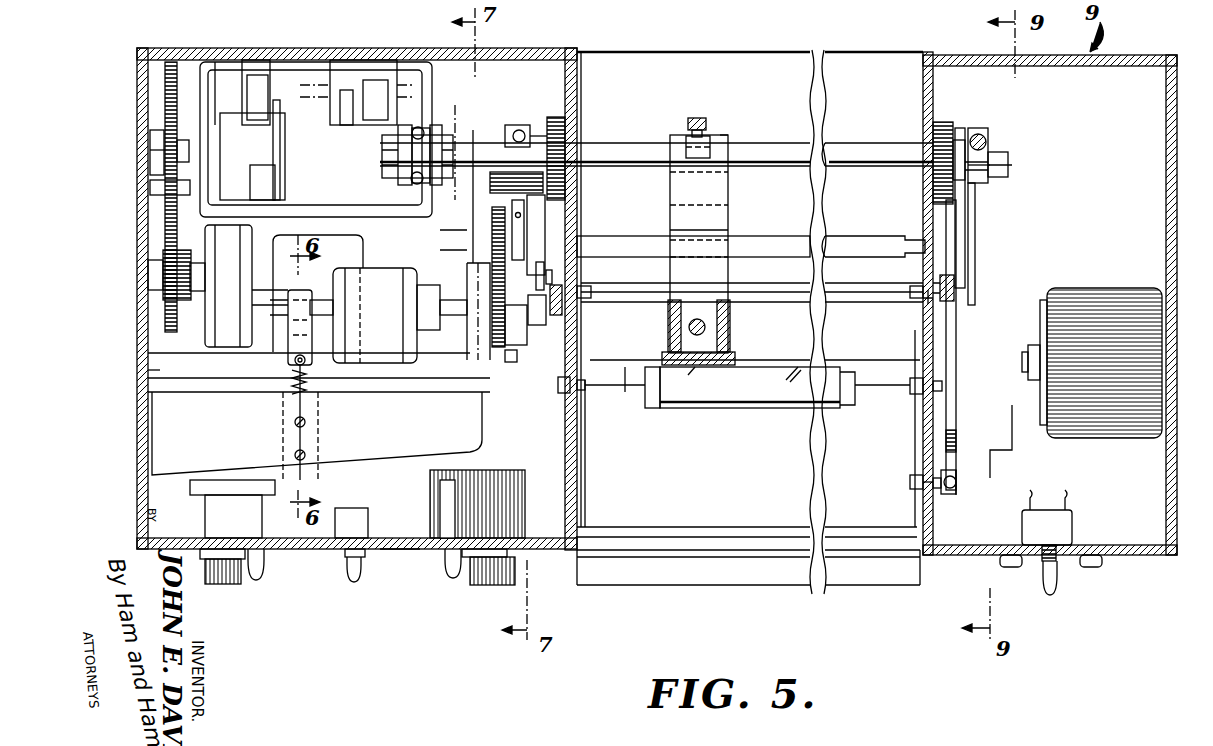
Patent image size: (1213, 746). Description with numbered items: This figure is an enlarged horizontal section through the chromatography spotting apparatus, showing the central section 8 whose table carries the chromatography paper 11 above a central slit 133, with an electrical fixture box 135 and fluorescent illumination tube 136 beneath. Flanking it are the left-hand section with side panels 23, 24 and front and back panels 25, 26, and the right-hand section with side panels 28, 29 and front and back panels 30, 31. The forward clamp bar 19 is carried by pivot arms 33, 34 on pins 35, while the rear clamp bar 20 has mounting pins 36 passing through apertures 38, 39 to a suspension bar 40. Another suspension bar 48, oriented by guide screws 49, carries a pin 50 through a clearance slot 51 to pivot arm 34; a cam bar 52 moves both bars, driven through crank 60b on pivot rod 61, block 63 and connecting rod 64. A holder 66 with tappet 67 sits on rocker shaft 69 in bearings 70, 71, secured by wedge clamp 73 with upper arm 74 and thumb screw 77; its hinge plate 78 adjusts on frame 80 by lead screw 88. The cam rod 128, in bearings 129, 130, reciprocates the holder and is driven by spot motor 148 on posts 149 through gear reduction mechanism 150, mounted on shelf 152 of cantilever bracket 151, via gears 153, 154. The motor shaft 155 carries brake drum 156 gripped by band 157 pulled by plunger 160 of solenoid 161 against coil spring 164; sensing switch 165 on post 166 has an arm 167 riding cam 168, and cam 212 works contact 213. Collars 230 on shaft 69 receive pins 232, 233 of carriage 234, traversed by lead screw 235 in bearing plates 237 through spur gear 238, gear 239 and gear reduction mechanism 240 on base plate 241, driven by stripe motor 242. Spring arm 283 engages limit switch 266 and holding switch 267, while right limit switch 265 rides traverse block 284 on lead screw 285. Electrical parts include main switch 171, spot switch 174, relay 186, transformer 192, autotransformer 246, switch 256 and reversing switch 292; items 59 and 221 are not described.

The central section 8 is at (792, 46).
The chromatography paper 11 is at (716, 60).
The forward clamp bar 19 is at (726, 527).
The rear clamp bar 20 is at (775, 302).
The side panel 23 is at (137, 92).
The side panel 24 is at (582, 62).
The front panel 25 is at (412, 549).
The back panel 26 is at (505, 58).
The side panel 28 is at (923, 80).
The side panel 29 is at (1177, 192).
The front panel 30 is at (1128, 555).
The back panel 31 is at (1125, 55).
The pivot arm 33 is at (585, 452).
The pivot arm 34 is at (915, 447).
The pins or screws 35 is at (587, 384).
The mounting pin 36 is at (591, 292).
The clearance aperture 38 is at (575, 206).
The clearance aperture 39 is at (925, 300).
The suspension bar 40 is at (954, 300).
The suspension bar 48 is at (952, 478).
The guide screws 49 is at (952, 495).
The pin 50 is at (910, 482).
The clearance slot 51 is at (925, 490).
The cam bar 52 is at (956, 356).
The pivot bracket 59 is at (984, 134).
The operating crank 60b is at (505, 128).
The pivot rod 61 is at (1008, 165).
The block 63 is at (995, 146).
The connecting rod 64 is at (975, 213).
The holder 66 is at (735, 188).
The mounting tappet 67 is at (728, 222).
The rocker shaft 69 is at (860, 143).
The bearing 70 is at (556, 117).
The bearing 71 is at (945, 125).
The wedge clamp element 73 is at (732, 133).
The upper arm 74 is at (686, 140).
The knurled thumb screw 77 is at (697, 118).
The inner hinge plate 78 is at (708, 365).
The frame 80 is at (661, 334).
The lead screw 88 is at (705, 330).
The cam rod 128 is at (636, 236).
The bearing 129 is at (560, 226).
The bearing 130 is at (965, 232).
The central slit 133 is at (778, 360).
The electrical fixture box 135 is at (635, 398).
The fluorescent illumination tube 136 is at (752, 408).
The spot motor 148 is at (388, 282).
The posts 149 is at (430, 285).
The gear reduction mechanism 150 is at (460, 375).
The cantilever bracket 151 is at (216, 446).
The shelf 152 is at (392, 392).
The gear element 153 is at (518, 355).
The gear element 154 is at (490, 222).
The shaft 155 is at (288, 320).
The brake drum 156 is at (285, 345).
The brake band 157 is at (305, 343).
The plunger 160 is at (308, 380).
The actuating solenoid 161 is at (318, 432).
The coil spring 164 is at (292, 390).
The sensing switch 165 is at (540, 325).
The post 166 is at (562, 327).
The arm 167 is at (552, 276).
The cam 168 is at (540, 225).
The main power switch 171 is at (1050, 585).
The spot switch 174 is at (262, 578).
The relay 186 is at (225, 584).
The transformer 192 is at (1115, 288).
The cam 212 is at (473, 240).
The contact 213 is at (520, 320).
The axis 221 is at (455, 200).
The collar 230 is at (398, 160).
The pin 232 is at (410, 182).
The pin 233 is at (420, 130).
The carriage 234 is at (205, 210).
The lead screw 235 is at (165, 128).
The bearing plates 237 is at (150, 172).
The spur gear 238 is at (177, 155).
The gear 239 is at (148, 267).
The gear reduction mechanism 240 is at (210, 318).
The base plate 241 is at (160, 370).
The stripe motor 242 is at (333, 246).
The autotransformer 246 is at (498, 585).
The switch 256 is at (352, 580).
The right limit switch 265 is at (375, 80).
The left limit switch 266 is at (258, 78).
The holding switch 267 is at (245, 78).
The spring arm 283 is at (285, 148).
The traverse block 284 is at (312, 100).
The lead screw 285 is at (312, 86).
The reversing switch 292 is at (453, 578).